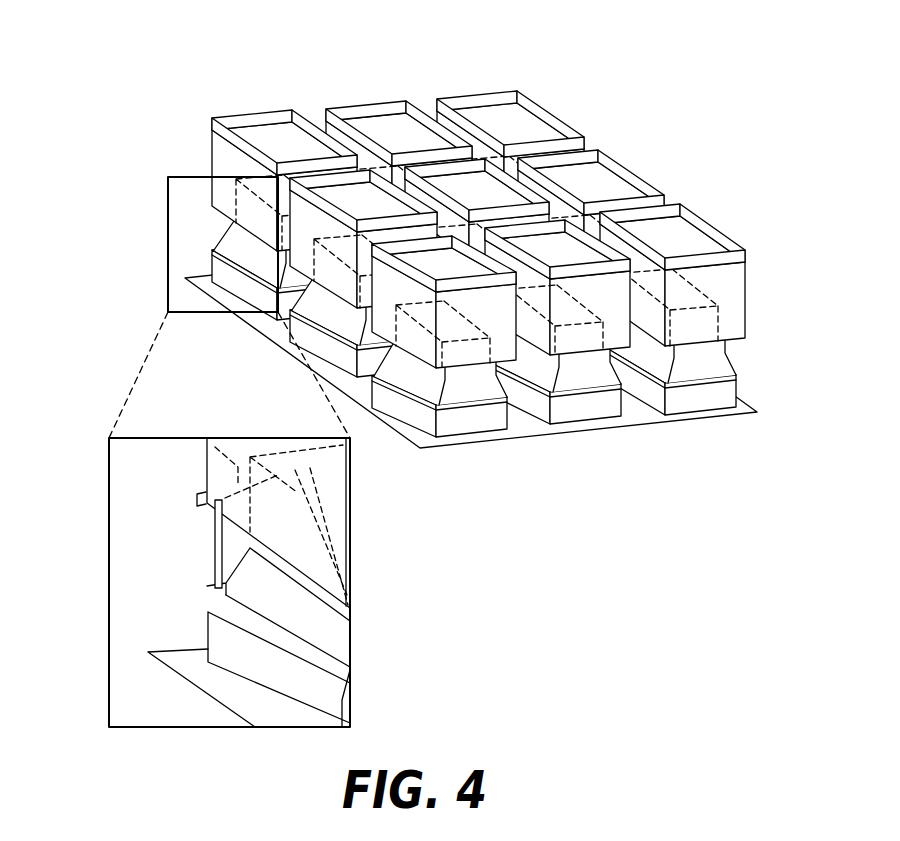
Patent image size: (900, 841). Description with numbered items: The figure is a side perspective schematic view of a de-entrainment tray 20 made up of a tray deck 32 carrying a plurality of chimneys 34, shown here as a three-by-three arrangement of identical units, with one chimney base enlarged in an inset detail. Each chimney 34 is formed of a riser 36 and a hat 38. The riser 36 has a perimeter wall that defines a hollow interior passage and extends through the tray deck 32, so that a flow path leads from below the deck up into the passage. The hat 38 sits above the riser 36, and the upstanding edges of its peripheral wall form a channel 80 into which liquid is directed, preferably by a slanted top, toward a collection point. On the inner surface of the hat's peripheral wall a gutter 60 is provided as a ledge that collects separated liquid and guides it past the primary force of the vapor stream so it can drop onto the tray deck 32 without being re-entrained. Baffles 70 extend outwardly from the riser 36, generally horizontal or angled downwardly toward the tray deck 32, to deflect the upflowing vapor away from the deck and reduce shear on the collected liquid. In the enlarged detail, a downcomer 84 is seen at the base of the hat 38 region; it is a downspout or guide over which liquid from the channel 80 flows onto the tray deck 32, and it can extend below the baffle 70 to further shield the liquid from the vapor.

The de-entrainment tray 20 is at (439, 387).
The tray deck 32 is at (750, 404).
The chimneys 34 is at (481, 387).
The riser 36 is at (727, 360).
The hat 38 is at (746, 263).
The gutter 60 is at (206, 440).
The baffle 70 is at (737, 378).
The channel 80 is at (493, 115).
The downcomer 84 is at (217, 543).